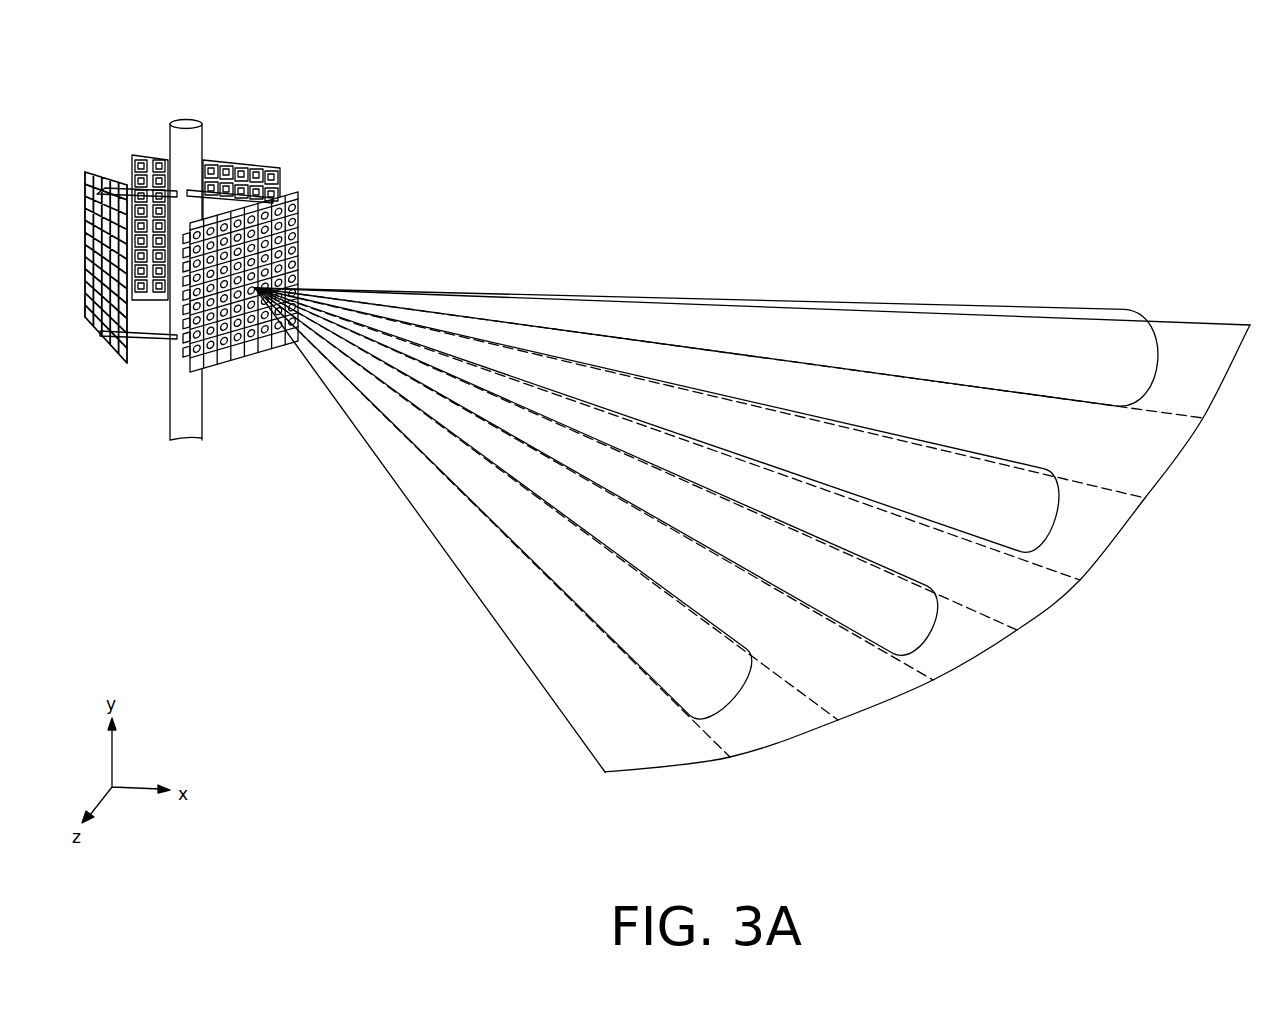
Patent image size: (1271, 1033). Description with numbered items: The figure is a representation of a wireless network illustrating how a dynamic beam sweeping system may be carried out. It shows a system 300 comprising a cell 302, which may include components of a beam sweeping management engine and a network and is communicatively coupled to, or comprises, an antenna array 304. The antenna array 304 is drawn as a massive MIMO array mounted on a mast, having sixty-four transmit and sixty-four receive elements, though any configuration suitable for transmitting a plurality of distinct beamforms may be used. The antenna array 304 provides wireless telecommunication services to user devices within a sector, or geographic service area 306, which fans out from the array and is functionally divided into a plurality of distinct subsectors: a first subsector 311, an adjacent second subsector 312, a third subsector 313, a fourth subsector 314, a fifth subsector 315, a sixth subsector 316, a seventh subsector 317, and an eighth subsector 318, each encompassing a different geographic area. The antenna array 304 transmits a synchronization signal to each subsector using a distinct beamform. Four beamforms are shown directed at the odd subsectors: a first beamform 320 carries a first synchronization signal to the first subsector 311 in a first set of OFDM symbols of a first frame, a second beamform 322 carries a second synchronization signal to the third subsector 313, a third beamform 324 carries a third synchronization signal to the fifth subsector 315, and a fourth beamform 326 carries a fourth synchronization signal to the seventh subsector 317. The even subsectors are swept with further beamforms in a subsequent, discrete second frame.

The system 300 is at (96, 104).
The cell 302 is at (246, 126).
The antenna array 304 is at (300, 256).
The geographic service area 306 is at (1163, 320).
The first subsector 311 is at (1224, 358).
The second subsector 312 is at (1147, 462).
The third subsector 313 is at (1114, 527).
The fourth subsector 314 is at (1035, 600).
The fifth subsector 315 is at (982, 647).
The sixth subsector 316 is at (884, 699).
The seventh subsector 317 is at (795, 735).
The eighth subsector 318 is at (675, 757).
The first beamform 320 is at (963, 306).
The second beamform 322 is at (903, 438).
The third beamform 324 is at (788, 598).
The fourth beamform 326 is at (575, 604).